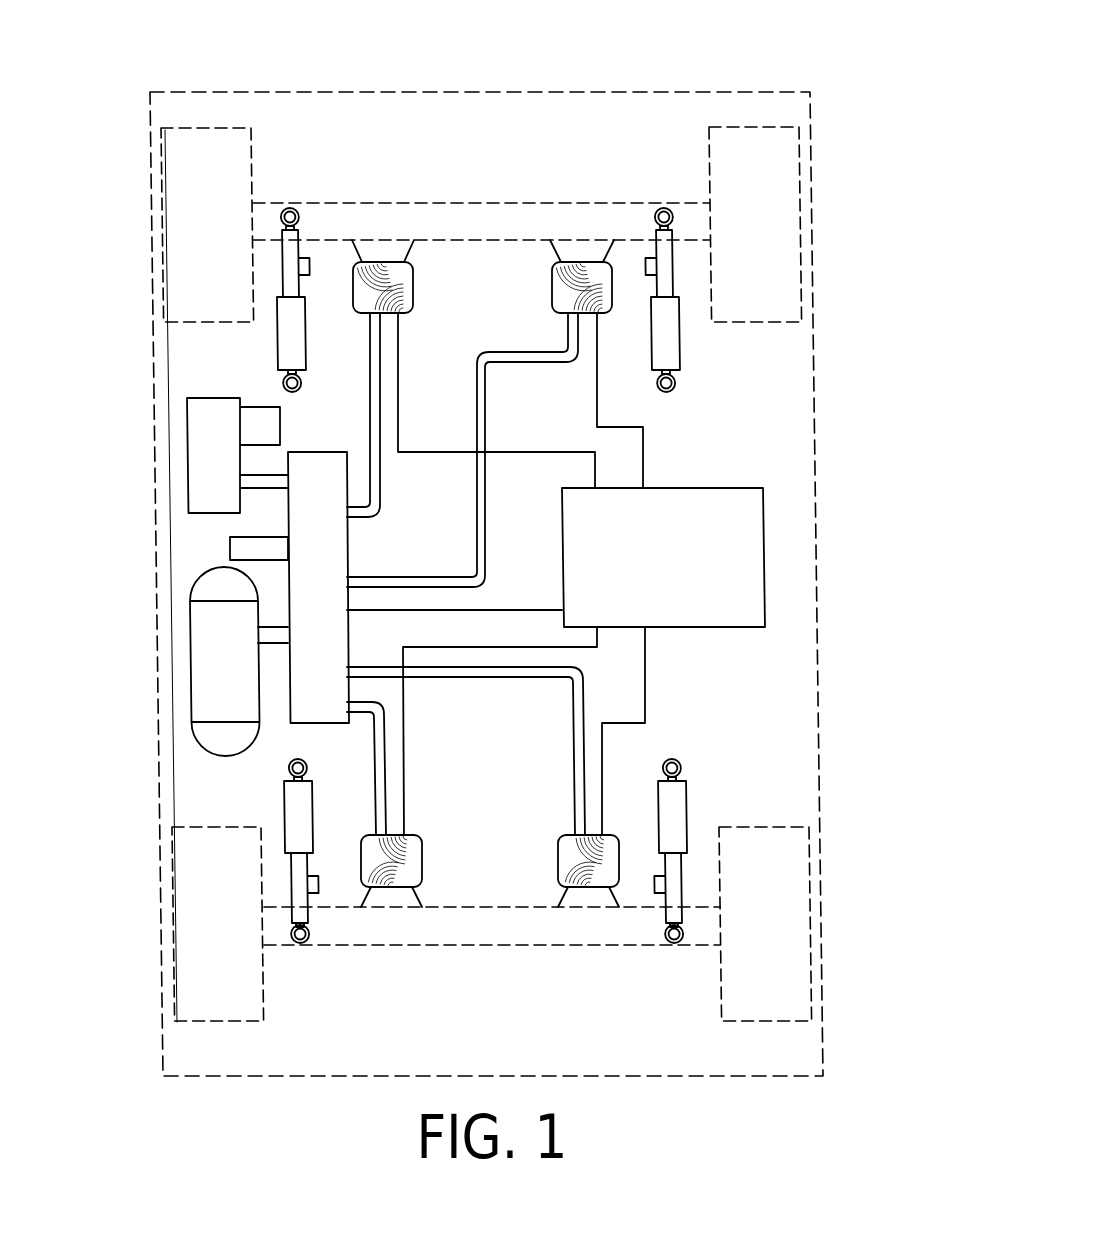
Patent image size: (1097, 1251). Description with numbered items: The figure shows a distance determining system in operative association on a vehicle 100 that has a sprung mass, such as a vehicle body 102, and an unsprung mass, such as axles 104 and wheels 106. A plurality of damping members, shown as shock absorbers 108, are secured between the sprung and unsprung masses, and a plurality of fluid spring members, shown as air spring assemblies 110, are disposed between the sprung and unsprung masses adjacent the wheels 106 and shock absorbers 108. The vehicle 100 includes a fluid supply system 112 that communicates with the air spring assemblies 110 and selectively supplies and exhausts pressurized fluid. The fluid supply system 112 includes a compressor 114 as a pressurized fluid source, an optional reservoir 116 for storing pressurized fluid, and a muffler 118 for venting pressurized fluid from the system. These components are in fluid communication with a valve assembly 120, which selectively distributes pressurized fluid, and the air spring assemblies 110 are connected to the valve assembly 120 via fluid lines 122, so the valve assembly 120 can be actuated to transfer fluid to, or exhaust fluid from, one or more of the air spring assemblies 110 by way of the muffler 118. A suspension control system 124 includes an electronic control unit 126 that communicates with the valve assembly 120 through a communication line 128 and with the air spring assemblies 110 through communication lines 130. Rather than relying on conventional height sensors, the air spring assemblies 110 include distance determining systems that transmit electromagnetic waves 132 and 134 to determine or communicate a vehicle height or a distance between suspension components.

The vehicle 100 is at (714, 72).
The vehicle body 102 is at (838, 372).
The axles 104 is at (450, 214).
The wheels 106 is at (192, 227).
The shock absorbers 108 is at (292, 333).
The air spring assemblies 110 is at (380, 228).
The fluid supply system 112 is at (174, 577).
The compressor 114 is at (186, 447).
The reservoir 116 is at (210, 670).
The muffler 118 is at (235, 553).
The valve assembly 120 is at (330, 570).
The fluid lines 122 is at (376, 372).
The suspension control system 124 is at (627, 574).
The electronic control unit 126 is at (745, 572).
The communication line 128 is at (485, 607).
The communication lines 130 is at (399, 345).
The electromagnetic waves 132 is at (410, 298).
The electromagnetic waves 134 is at (386, 276).